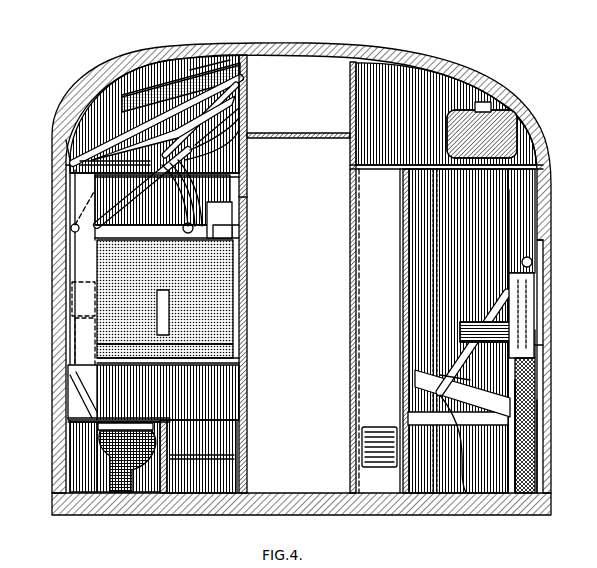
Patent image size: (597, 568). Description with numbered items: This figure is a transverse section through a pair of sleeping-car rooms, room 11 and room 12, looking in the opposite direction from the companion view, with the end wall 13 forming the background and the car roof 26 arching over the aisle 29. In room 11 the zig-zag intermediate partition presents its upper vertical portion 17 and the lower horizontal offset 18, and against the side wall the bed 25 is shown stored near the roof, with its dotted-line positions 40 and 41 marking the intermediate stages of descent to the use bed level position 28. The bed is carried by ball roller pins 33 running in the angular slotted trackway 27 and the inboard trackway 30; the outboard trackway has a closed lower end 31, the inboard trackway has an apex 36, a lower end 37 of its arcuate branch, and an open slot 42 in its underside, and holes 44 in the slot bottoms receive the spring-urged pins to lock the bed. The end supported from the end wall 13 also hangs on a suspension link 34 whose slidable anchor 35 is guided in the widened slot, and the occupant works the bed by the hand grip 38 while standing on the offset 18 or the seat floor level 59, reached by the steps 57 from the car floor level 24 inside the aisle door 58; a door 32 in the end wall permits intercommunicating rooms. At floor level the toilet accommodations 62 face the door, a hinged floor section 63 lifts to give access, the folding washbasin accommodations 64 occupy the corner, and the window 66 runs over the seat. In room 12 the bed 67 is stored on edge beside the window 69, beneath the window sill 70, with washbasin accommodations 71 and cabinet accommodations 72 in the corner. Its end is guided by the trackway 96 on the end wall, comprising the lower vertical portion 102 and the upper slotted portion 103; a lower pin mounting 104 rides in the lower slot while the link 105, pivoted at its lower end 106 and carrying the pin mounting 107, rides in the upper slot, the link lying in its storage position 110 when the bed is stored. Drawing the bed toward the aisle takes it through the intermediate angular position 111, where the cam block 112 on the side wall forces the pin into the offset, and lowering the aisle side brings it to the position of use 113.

The room 11 is at (154, 387).
The room 12 is at (446, 114).
The end wall 13 is at (498, 195).
The upper vertical portion of partition wall 17 is at (228, 180).
The offset 18 is at (205, 356).
The car floor level 24 is at (303, 490).
The bed 25 is at (190, 70).
The roof 26 is at (162, 75).
The angular slotted trackway 27 is at (65, 140).
The use bed level position 28 is at (72, 262).
The aisle 29 is at (348, 257).
The inboard trackway 30 is at (247, 153).
The lower end of trackway 31 is at (72, 230).
The door 32 is at (234, 222).
The ball roller pin 33 is at (128, 97).
The suspension link 34 is at (226, 110).
The slidable anchor 35 is at (247, 134).
The apex of trackway 36 is at (170, 218).
The lower end of arcuate branch 37 is at (228, 234).
The hand grip 38 is at (249, 92).
The dotted-line position 40 is at (70, 108).
The dotted-line position 41 is at (68, 205).
The open slot 42 is at (248, 197).
The hole 44 is at (250, 162).
The steps 57 is at (208, 455).
The aisle door 58 is at (249, 300).
The seat floor level 59 is at (118, 418).
The toilet accommodations 62 is at (122, 470).
The hinged floor section 63 is at (88, 403).
The folding washbasin accommodations 64 is at (74, 341).
The window 66 is at (68, 294).
The bed 67 is at (525, 468).
The window 69 is at (540, 250).
The window sill 70 is at (545, 345).
The washbasin accommodations 71 is at (468, 322).
The cabinet accommodations 72 is at (509, 285).
The trackway 96 is at (530, 330).
The lower vertical trackway portion 102 is at (535, 440).
The upper slotted trackway portion 103 is at (520, 300).
The lower pin mounting 104 is at (540, 405).
The link 105 is at (440, 400).
The lower end of link 106 is at (550, 368).
The pin mounting 107 is at (523, 263).
The link storage position 110 is at (533, 262).
The intermediate angular position 111 is at (440, 375).
The cam block 112 is at (412, 493).
The position of use 113 is at (405, 420).